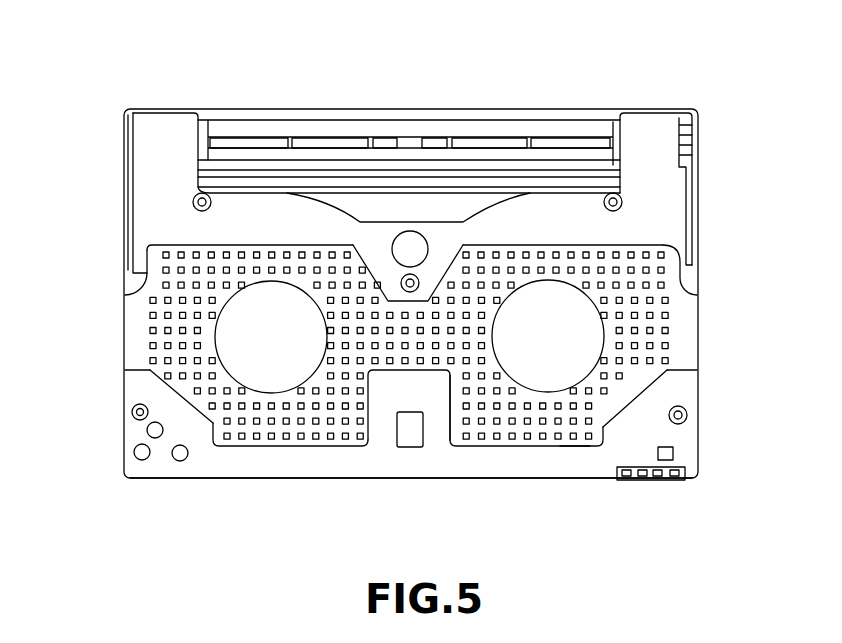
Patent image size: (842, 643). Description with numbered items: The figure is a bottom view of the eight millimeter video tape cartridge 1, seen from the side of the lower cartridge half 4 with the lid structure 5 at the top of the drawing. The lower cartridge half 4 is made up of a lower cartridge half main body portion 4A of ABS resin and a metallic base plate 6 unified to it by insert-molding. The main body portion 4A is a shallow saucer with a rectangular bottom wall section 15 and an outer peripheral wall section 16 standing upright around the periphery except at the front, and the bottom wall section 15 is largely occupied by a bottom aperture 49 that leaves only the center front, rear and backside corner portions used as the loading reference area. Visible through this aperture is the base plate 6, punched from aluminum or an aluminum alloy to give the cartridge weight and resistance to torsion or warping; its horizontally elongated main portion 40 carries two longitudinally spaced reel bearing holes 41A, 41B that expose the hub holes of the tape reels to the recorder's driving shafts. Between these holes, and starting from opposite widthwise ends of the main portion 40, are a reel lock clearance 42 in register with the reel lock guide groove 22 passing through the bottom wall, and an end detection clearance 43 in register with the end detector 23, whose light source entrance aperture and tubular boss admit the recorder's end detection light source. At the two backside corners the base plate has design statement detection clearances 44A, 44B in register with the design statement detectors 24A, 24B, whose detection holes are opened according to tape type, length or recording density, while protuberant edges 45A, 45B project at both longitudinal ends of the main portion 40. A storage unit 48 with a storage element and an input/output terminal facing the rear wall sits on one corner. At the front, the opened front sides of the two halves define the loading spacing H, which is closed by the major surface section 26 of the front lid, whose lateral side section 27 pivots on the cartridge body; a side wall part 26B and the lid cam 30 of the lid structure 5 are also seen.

The tape cartridge 1 is at (727, 128).
The lower cartridge half 4 is at (685, 387).
The lower cartridge half main body portion 4A is at (698, 453).
The lid structure 5 is at (605, 32).
The base plate 6 is at (548, 420).
The bottom wall section 15 is at (157, 222).
The outer peripheral wall section 16 is at (237, 478).
The reel lock guide groove 22 is at (413, 440).
The end detector 23 is at (403, 242).
The design statement detector 24A is at (678, 433).
The design statement detector 24B is at (132, 436).
The major surface section 26 is at (577, 110).
The lid side portion 26B is at (127, 173).
The lateral side section 27 is at (585, 153).
The lid cam 30 is at (687, 218).
The main portion of the base plate 40 is at (680, 340).
The reel bearing hole 41A is at (525, 375).
The reel bearing hole 41B is at (287, 395).
The reel lock clearance 42 is at (368, 425).
The end detection clearance 43 is at (367, 256).
The design statement detection clearance 44A is at (622, 420).
The design statement detection clearance 44B is at (157, 389).
The protuberant edge 45A is at (680, 290).
The protuberant edge 45B is at (135, 297).
The storage unit 48 is at (643, 484).
The bottom aperture 49 is at (568, 445).
The loading spacing H is at (452, 178).